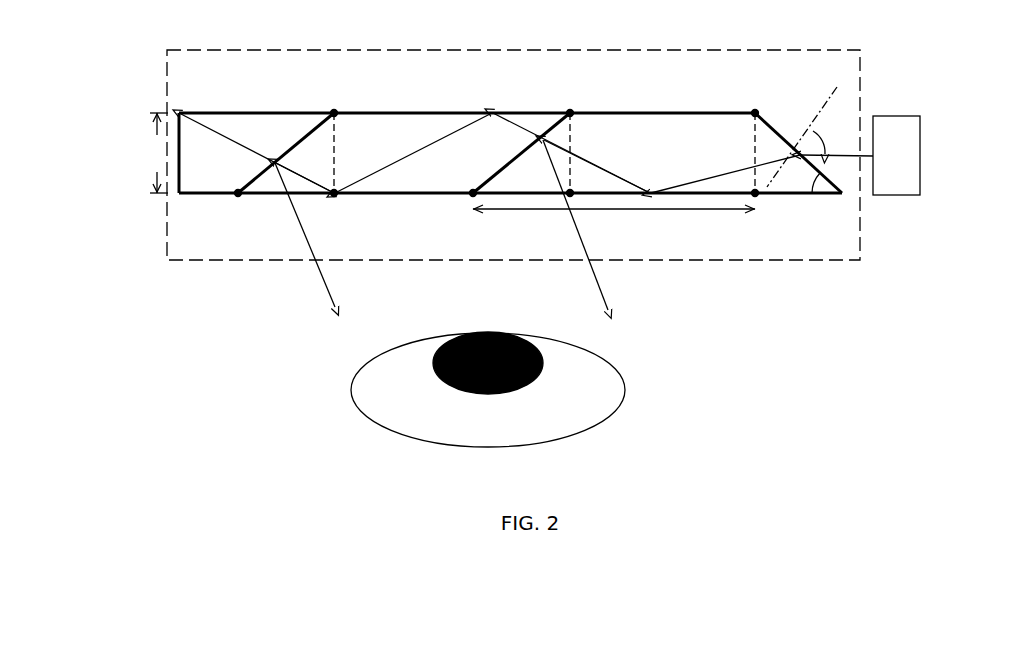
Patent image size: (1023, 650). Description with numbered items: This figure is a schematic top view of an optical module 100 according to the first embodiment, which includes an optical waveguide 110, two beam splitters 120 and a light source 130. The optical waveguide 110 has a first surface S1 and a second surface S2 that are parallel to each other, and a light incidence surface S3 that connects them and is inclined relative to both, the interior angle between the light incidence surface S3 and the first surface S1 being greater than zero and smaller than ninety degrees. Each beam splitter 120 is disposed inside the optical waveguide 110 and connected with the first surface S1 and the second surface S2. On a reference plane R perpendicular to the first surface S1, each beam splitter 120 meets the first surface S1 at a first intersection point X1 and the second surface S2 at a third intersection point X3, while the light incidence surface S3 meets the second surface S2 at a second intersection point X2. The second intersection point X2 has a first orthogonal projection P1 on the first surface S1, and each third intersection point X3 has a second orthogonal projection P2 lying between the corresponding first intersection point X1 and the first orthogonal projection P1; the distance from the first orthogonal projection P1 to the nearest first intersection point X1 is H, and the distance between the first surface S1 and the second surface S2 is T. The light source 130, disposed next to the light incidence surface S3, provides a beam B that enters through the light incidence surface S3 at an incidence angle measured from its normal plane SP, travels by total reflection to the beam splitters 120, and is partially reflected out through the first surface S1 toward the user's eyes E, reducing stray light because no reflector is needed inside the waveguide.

The optical module 100 is at (916, 244).
The optical waveguide 110 is at (510, 158).
The beam splitter 120 is at (307, 133).
The light source 130 is at (917, 135).
The reference plane R is at (798, 50).
The first surface S1 is at (416, 197).
The second surface S2 is at (418, 110).
The light incidence surface S3 is at (781, 132).
The normal plane SP is at (807, 124).
The first intersection point X1 is at (236, 197).
The second intersection point X2 is at (755, 110).
The third intersection point X3 is at (334, 110).
The first orthogonal projection P1 is at (757, 197).
The second orthogonal projection P2 is at (334, 197).
The distance between the first surface and the second surface T is at (159, 153).
The distance between the first orthogonal projection and the first intersection poin H is at (614, 225).
The beam B is at (845, 158).
The user's eyes E is at (627, 392).